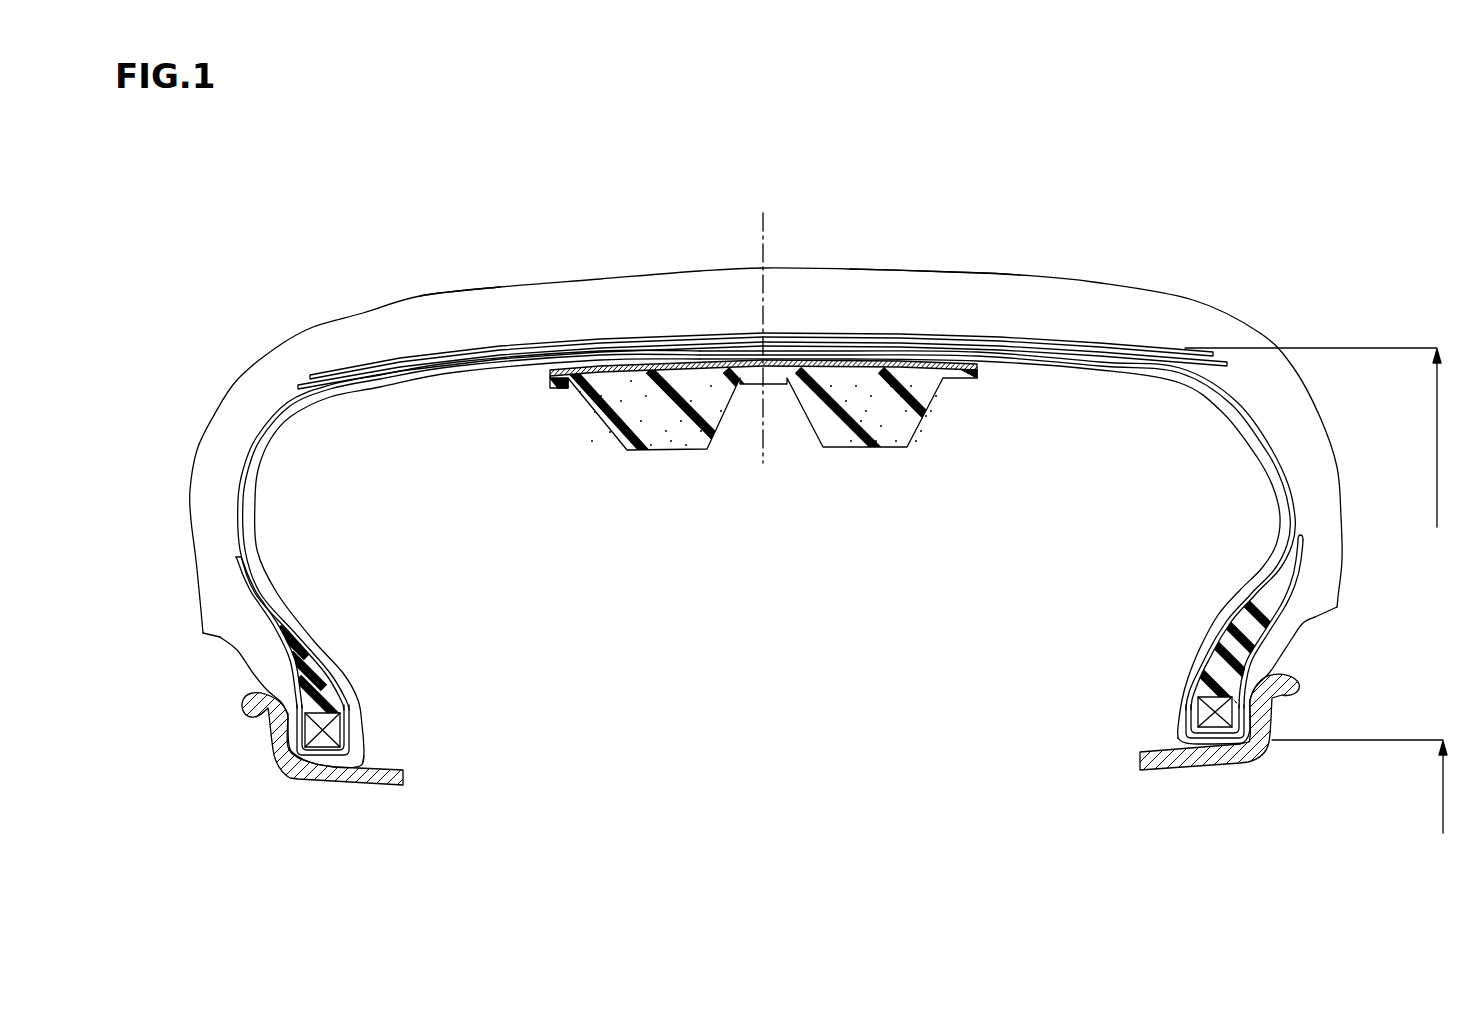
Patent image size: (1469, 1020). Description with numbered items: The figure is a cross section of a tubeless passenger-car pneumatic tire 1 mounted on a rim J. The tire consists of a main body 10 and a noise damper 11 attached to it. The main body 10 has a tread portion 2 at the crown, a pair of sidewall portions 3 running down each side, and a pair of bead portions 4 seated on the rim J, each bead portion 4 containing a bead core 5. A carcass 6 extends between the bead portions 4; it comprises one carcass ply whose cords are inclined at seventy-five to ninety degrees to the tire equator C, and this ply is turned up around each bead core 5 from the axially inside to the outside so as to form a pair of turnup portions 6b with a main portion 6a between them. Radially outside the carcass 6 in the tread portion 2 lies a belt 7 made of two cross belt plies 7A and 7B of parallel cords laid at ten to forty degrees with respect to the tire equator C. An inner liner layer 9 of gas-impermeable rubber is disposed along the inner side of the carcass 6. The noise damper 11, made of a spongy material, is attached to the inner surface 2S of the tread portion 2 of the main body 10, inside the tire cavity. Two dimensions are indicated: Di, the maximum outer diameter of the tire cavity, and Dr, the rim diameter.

The pneumatic tire 1 is at (780, 289).
The tread portion 2 is at (540, 285).
The inner surface of the tread portion 2S is at (460, 295).
The sidewall portion 3 is at (1323, 425).
The bead portion 4 is at (774, 681).
The bead core 5 is at (1202, 714).
The carcass 6 is at (769, 552).
The main portion 6a is at (1277, 460).
The turnup portion 6b is at (1295, 524).
The belt 7 is at (762, 258).
The cross belt ply 7A is at (617, 345).
The cross belt ply 7B is at (677, 340).
The inner liner layer 9 is at (290, 423).
The main body 10 is at (953, 297).
The noise damper 11 is at (862, 388).
The tire equator C is at (763, 230).
The rim J is at (1217, 763).
The maximum outer diameter of the tire cavity Di is at (1319, 450).
The rim diameter Dr is at (1364, 804).